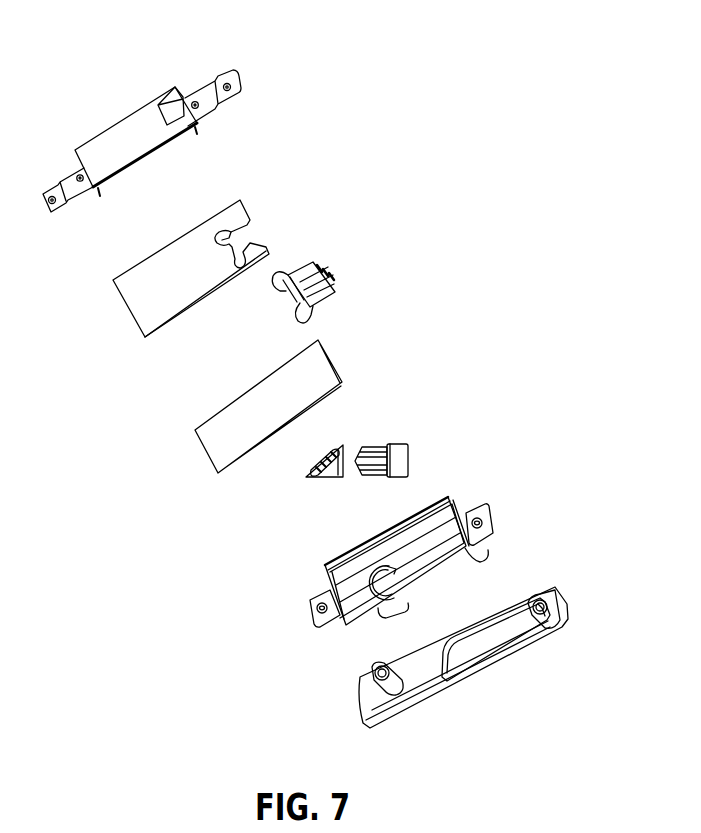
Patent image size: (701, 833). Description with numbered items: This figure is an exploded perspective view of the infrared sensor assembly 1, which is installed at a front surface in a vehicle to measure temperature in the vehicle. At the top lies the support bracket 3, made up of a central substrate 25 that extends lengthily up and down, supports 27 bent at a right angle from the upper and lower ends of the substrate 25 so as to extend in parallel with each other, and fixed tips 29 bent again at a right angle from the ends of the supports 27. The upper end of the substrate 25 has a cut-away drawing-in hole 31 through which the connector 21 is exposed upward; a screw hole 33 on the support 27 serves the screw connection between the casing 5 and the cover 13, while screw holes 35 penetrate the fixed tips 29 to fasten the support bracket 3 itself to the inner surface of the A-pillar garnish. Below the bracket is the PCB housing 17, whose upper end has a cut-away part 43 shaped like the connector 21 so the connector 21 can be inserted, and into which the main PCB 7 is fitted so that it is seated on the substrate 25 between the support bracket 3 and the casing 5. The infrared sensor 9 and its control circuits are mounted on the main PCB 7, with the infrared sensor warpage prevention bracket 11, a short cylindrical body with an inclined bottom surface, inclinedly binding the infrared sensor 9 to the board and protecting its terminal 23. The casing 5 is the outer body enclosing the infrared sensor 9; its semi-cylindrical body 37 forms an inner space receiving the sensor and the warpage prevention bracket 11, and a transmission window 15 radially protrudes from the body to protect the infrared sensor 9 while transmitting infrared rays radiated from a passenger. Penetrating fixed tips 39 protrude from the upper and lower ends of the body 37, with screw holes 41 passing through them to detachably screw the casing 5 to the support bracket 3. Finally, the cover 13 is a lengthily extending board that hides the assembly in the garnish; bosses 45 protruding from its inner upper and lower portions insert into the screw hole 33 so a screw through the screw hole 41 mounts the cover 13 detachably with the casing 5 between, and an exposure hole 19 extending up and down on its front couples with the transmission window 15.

The infrared sensor assembly 1 is at (447, 163).
The support bracket 3 is at (113, 98).
The casing 5 is at (470, 490).
The main PCB 7 is at (323, 363).
The infrared sensor 9 is at (410, 432).
The infrared sensor warpage prevention bracket 11 is at (335, 470).
The cover 13 is at (545, 570).
The transmission window 15 is at (470, 565).
The PCB housing 17 is at (264, 219).
The exposure hole 19 is at (482, 647).
The connector 21 is at (338, 270).
The terminal 23 is at (372, 448).
The central substrate 25 is at (110, 142).
The supports 27 is at (207, 102).
The fixed tips 29 is at (240, 77).
The drawing-in hole 31 is at (170, 108).
The screw hole 33 is at (82, 184).
The screw holes 35 is at (52, 207).
The semi-cylindrical body 37 is at (400, 517).
The penetrating fixed tips 39 is at (488, 515).
The screw holes 41 is at (312, 607).
The cut-away part 43 is at (245, 248).
The bosses 45 is at (360, 677).